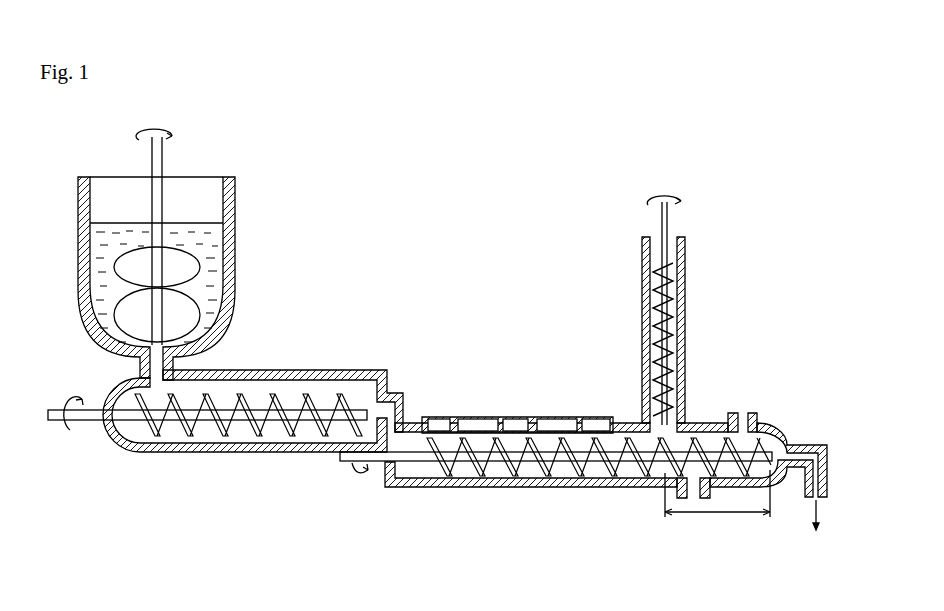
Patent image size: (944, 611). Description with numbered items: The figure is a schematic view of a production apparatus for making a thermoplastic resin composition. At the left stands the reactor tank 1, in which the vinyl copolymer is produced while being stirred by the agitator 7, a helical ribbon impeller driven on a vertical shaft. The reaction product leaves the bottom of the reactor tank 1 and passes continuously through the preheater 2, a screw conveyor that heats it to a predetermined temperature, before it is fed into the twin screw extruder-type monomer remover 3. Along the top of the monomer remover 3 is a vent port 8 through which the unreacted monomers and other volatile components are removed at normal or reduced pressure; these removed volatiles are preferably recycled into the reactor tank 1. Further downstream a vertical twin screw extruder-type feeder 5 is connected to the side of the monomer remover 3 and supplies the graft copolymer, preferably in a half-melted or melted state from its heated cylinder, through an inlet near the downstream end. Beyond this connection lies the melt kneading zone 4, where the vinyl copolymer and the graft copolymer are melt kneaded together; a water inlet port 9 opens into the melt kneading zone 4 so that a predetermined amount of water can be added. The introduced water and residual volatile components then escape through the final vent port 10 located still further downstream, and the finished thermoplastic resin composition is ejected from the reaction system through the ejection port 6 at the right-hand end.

The reactor tank 1 is at (212, 275).
The agitator (helical ribbon impeller) 7 is at (180, 260).
The preheater 2 is at (328, 392).
The twin screw extruder-type monomer remover 3 is at (482, 440).
The vent port 8 is at (437, 418).
The twin screw extruder-type feeder 5 is at (672, 287).
The final vent port 10 is at (742, 420).
The water inlet port 9 is at (693, 493).
The melt kneading zone 4 is at (722, 510).
The ejection port 6 is at (820, 503).